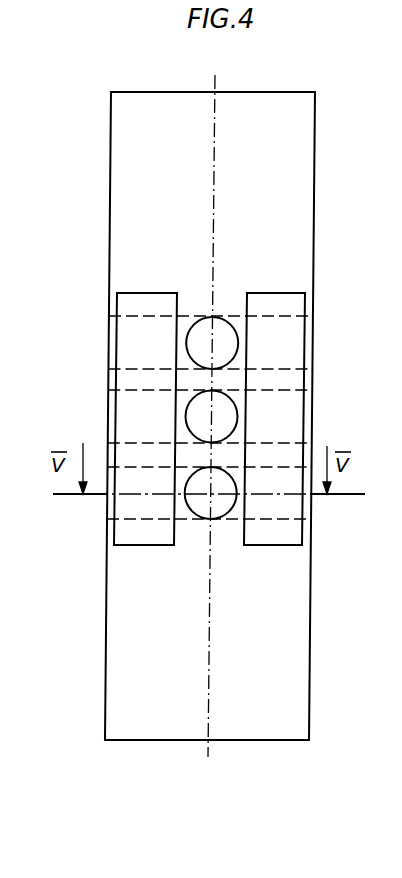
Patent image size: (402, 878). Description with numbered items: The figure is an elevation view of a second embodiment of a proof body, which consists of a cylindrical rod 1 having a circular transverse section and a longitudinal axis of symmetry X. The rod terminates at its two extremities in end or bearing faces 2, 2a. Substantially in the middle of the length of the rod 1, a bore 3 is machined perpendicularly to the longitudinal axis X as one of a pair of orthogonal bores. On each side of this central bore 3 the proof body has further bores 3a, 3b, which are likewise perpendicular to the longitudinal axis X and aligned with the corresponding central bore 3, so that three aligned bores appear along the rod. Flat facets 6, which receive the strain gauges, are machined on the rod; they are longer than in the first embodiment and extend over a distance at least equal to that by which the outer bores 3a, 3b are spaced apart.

The rod 1 is at (275, 597).
The end or bearing face 2 is at (257, 92).
The end or bearing face 2a is at (152, 740).
The bore 3 is at (223, 405).
The bore 3a is at (221, 333).
The bore 3b is at (200, 505).
The flat facet 6 is at (145, 343).
The longitudinal axis of symmetry X is at (214, 183).